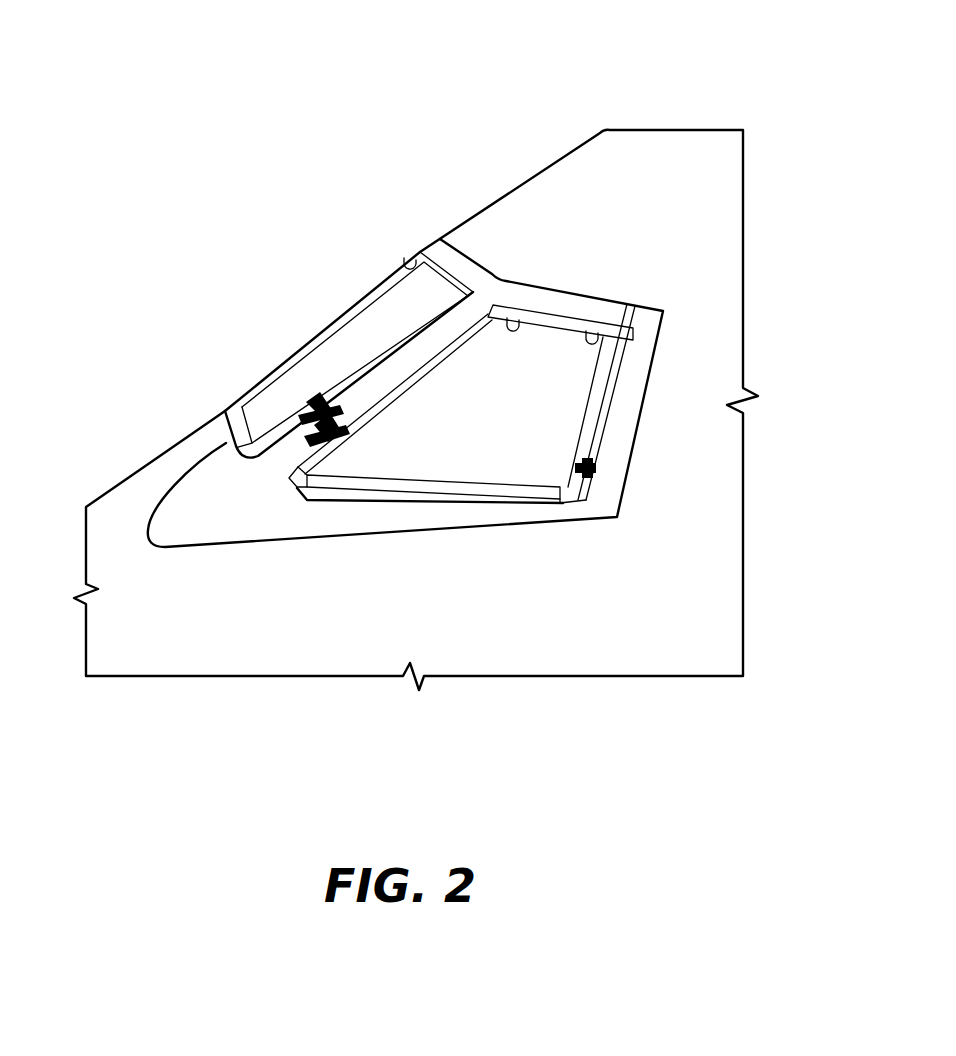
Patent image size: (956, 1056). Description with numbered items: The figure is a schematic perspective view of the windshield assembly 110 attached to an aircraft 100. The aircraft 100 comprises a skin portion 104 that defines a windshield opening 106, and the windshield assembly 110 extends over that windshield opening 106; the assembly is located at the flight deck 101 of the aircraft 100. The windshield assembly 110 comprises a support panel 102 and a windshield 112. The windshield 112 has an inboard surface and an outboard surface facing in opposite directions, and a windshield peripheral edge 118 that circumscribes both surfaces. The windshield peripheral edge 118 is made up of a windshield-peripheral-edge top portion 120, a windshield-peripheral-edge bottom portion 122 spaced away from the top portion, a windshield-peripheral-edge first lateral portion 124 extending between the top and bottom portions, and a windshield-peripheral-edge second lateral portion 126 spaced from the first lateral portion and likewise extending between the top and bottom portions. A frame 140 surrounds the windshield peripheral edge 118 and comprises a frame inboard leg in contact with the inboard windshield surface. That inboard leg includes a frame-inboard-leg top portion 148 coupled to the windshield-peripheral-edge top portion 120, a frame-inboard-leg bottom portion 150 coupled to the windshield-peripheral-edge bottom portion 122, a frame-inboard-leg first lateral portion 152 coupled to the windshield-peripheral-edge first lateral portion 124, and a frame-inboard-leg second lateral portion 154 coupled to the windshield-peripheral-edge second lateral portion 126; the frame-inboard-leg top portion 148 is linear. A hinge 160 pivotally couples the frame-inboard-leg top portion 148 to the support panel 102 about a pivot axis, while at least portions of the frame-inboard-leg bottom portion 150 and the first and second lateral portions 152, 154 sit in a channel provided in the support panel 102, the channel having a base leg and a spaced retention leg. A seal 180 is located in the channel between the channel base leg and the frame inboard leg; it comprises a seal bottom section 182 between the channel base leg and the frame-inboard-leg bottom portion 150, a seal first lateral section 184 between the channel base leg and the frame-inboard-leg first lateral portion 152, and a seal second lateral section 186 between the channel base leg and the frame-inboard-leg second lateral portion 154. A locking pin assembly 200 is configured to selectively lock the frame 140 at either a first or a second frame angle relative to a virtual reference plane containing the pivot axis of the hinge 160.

The aircraft 100 is at (351, 88).
The flight deck 101 is at (440, 420).
The support panel 102 is at (497, 285).
The skin portion 104 is at (410, 258).
The windshield opening 106 is at (330, 533).
The windshield assembly 110 is at (277, 288).
The windshield 112 is at (367, 323).
The windshield peripheral edge 118 is at (530, 330).
The windshield-peripheral-edge top portion 120 is at (543, 328).
The windshield-peripheral-edge bottom portion 122 is at (435, 478).
The windshield-peripheral-edge first lateral portion 124 is at (443, 362).
The windshield-peripheral-edge second lateral portion 126 is at (581, 424).
The frame 140 is at (628, 358).
The frame-inboard-leg top portion 148 is at (568, 330).
The frame-inboard-leg bottom portion 150 is at (477, 492).
The frame-inboard-leg first lateral portion 152 is at (400, 388).
The frame-inboard-leg second lateral portion 154 is at (582, 457).
The hinge 160 is at (622, 372).
The seal 180 is at (236, 462).
The seal bottom section 182 is at (372, 485).
The seal first lateral section 184 is at (367, 415).
The seal second lateral section 186 is at (598, 386).
The locking pin assembly 200 is at (278, 484).